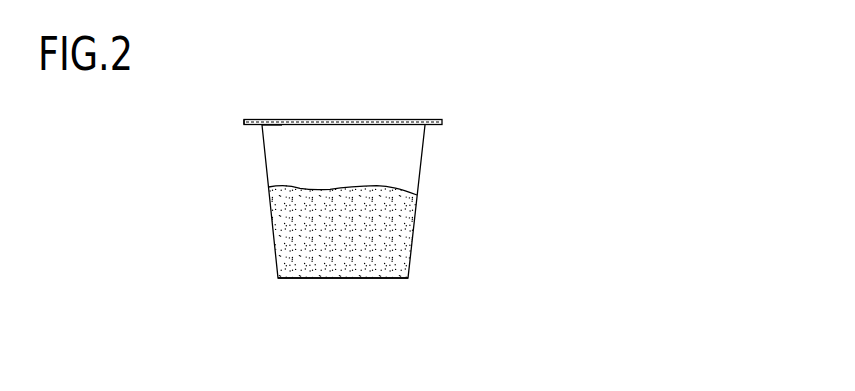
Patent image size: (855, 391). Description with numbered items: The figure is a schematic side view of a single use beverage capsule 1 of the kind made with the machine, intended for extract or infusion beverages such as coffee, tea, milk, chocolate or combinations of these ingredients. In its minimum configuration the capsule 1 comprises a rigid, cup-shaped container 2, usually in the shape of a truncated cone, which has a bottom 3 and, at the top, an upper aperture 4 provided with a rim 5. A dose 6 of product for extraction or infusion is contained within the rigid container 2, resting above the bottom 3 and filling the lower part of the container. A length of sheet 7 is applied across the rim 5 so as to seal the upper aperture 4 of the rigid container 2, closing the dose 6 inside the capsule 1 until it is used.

The single use beverage capsule 1 is at (363, 180).
The rigid cup-shaped container 2 is at (423, 158).
The bottom 3 is at (335, 280).
The upper aperture 4 is at (371, 110).
The rim 5 is at (249, 126).
The dose of product 6 is at (317, 217).
The length of sheet 7 is at (272, 118).